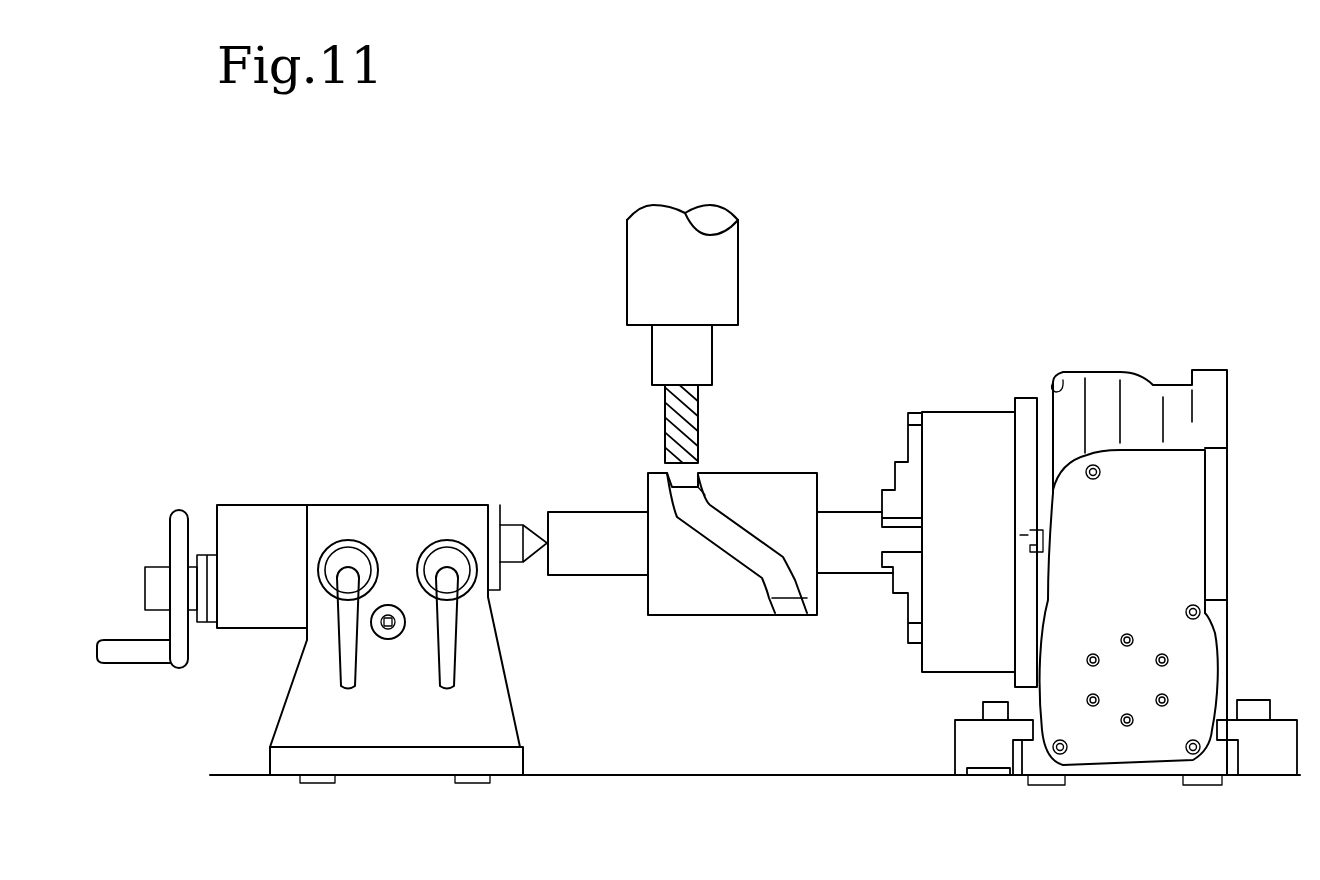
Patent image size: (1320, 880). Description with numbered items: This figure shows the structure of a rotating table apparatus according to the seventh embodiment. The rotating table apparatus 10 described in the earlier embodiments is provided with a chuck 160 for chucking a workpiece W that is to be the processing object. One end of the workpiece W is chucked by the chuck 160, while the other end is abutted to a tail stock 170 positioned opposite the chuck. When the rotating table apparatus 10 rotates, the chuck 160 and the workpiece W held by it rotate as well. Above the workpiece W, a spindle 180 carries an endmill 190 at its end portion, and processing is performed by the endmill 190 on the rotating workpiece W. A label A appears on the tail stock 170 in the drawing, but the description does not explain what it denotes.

The rotating table apparatus 10 is at (1088, 368).
The chuck 160 is at (973, 423).
The tail stock 170 is at (322, 595).
The spindle 180 is at (727, 252).
The endmill 190 is at (700, 417).
The workpiece W is at (700, 673).
The reference position A is at (397, 521).